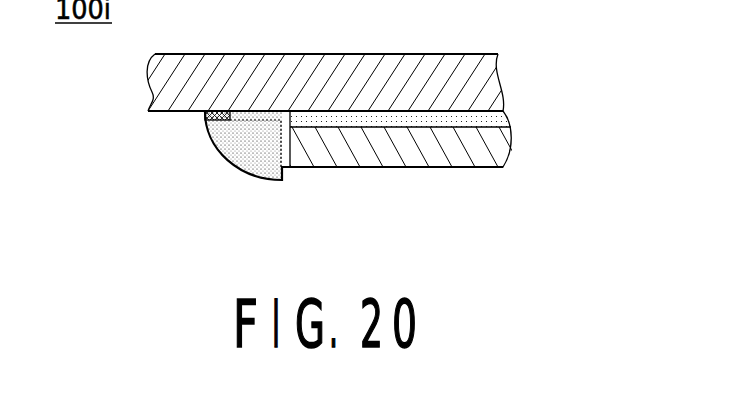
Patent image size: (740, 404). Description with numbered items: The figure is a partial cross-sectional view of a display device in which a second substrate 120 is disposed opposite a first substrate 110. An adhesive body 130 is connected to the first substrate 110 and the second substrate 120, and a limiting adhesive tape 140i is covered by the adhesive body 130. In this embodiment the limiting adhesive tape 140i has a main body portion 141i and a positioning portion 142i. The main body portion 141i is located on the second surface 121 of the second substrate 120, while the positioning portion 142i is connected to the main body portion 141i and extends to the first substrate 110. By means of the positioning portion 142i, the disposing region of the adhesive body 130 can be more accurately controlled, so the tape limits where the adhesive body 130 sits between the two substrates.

The first substrate 110 is at (492, 147).
The second substrate 120 is at (478, 78).
The second surface 121 is at (177, 121).
The adhesive body 130 is at (268, 181).
The limiting adhesive tape 140i is at (173, 171).
The main body portion 141i is at (243, 177).
The positioning portion 142i is at (213, 116).